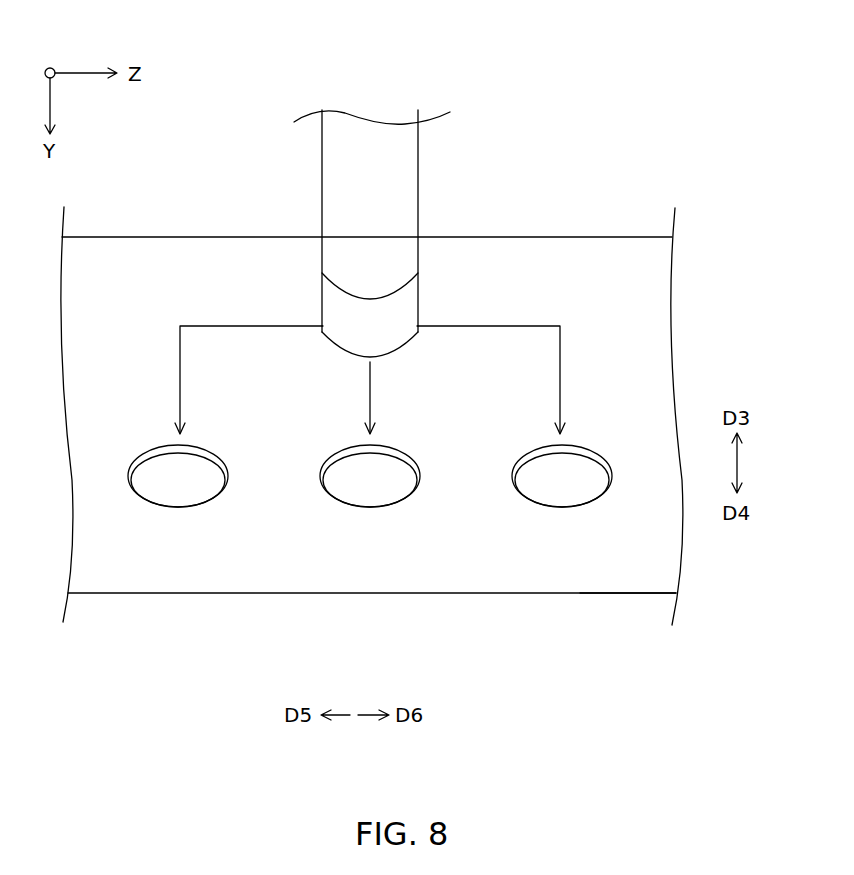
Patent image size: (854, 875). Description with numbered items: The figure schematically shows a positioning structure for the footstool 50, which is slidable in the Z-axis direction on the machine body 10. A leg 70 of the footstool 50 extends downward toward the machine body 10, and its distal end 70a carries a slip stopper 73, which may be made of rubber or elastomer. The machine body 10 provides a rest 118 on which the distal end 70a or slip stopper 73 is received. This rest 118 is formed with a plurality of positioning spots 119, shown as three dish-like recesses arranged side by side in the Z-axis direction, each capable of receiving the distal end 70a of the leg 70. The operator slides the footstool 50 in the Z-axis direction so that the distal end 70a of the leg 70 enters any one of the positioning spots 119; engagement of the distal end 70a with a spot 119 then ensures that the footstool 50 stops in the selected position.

The machine body 10 is at (618, 227).
The leg 70 is at (429, 221).
The footstool 50 is at (437, 148).
The distal end 70a is at (295, 256).
The slip stopper 73 is at (320, 322).
The positioning spots 119 is at (178, 507).
The rest 118 is at (633, 553).